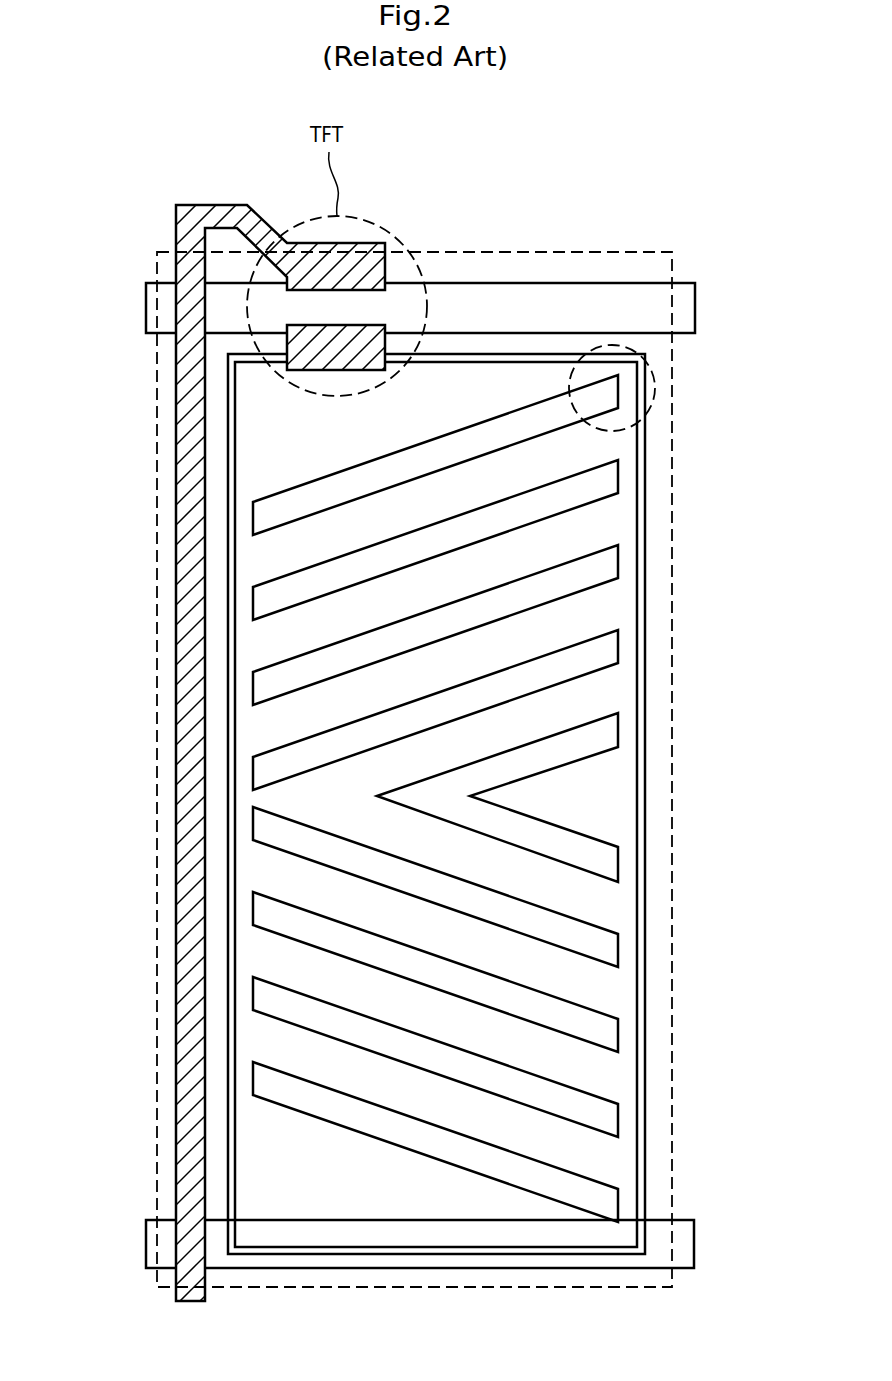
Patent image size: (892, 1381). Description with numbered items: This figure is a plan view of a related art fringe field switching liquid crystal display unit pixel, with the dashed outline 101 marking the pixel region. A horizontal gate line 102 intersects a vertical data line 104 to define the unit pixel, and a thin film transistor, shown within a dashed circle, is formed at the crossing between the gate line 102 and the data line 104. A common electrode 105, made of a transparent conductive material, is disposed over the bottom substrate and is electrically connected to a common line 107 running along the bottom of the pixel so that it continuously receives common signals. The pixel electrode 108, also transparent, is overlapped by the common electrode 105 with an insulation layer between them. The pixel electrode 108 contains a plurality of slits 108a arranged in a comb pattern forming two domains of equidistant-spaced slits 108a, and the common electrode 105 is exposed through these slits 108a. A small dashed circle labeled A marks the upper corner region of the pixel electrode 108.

The pixel region 101 is at (611, 252).
The gate line 102 is at (685, 312).
The data line 104 is at (187, 779).
The common electrode 105 is at (607, 477).
The common line 107 is at (680, 1262).
The pixel electrode 108 is at (618, 798).
The slits 108a is at (633, 553).
The detail region A is at (653, 387).